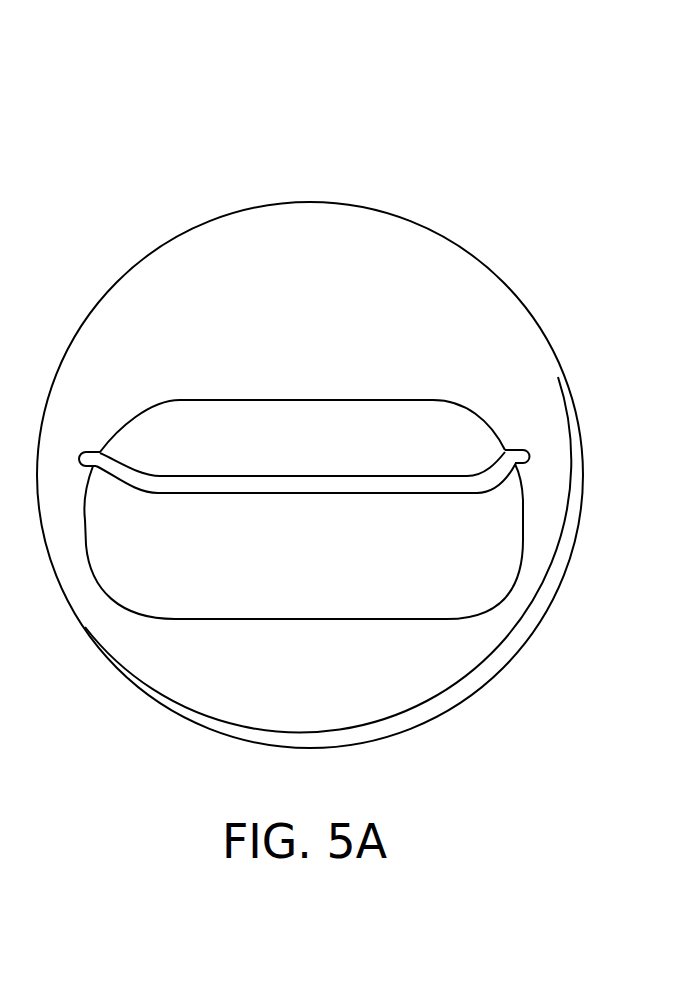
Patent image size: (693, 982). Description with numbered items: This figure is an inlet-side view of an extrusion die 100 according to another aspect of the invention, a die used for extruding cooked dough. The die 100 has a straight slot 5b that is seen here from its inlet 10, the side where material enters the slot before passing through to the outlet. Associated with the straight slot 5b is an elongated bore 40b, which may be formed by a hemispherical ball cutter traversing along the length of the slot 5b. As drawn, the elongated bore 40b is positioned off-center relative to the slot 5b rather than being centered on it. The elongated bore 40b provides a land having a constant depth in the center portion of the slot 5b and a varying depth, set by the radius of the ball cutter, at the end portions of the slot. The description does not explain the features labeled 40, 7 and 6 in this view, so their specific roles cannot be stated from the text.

The extrusion die 100 is at (138, 108).
The upper housing part 40 is at (191, 416).
The elongated bore 40b is at (313, 603).
The tab 7 is at (88, 446).
The seal 6 is at (308, 471).
The inlet 10 is at (428, 481).
The straight slot 5b is at (142, 495).